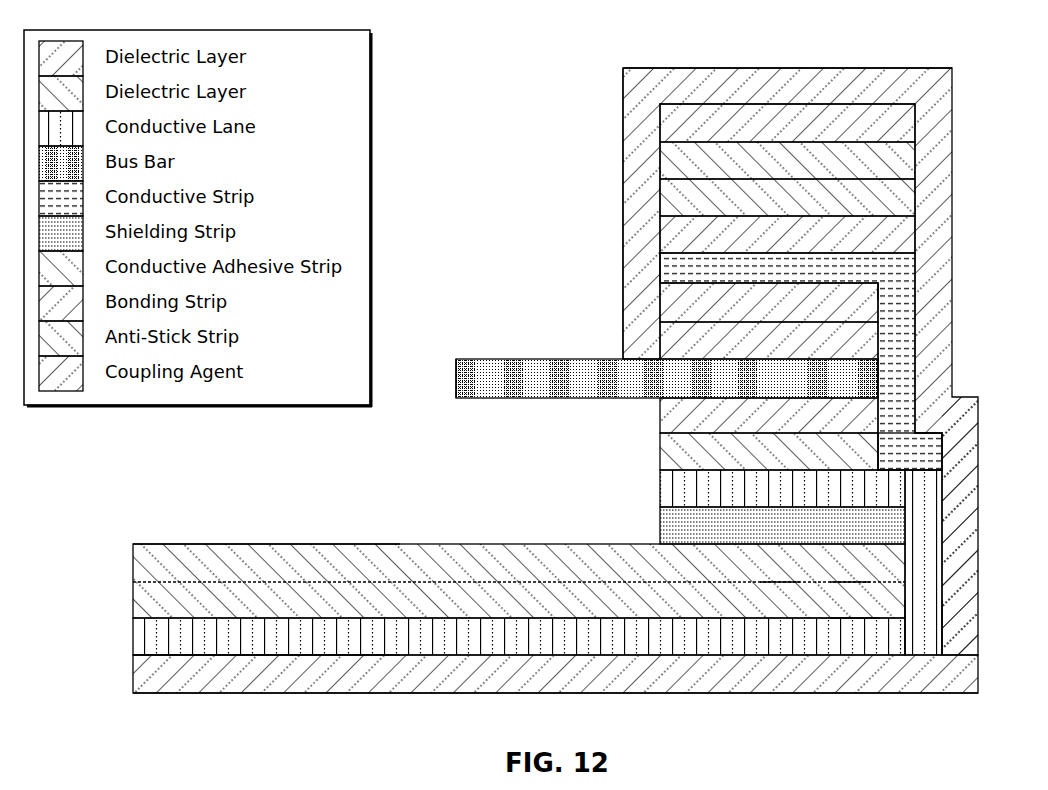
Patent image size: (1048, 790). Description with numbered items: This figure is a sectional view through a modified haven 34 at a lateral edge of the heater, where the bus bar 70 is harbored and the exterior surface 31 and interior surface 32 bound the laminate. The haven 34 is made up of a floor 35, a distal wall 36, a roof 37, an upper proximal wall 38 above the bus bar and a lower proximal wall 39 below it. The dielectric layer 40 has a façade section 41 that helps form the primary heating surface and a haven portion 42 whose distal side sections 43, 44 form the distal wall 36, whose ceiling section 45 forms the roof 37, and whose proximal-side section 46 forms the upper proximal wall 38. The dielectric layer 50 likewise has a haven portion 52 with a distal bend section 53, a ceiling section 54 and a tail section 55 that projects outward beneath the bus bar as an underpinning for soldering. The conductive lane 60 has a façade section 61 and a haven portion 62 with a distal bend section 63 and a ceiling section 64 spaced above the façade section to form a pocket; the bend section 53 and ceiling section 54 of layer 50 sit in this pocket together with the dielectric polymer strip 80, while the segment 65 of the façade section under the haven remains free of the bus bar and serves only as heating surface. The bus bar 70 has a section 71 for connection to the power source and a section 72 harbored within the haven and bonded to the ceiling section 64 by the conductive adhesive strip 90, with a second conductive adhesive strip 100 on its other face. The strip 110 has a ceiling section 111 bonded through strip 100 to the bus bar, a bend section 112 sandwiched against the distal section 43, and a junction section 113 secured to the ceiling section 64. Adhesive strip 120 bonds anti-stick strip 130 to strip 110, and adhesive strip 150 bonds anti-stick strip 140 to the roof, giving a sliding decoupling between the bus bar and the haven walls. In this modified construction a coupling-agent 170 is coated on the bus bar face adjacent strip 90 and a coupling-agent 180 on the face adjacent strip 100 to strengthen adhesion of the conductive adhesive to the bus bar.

The exterior surface 31 is at (610, 694).
The interior surface 32 is at (291, 543).
The haven 34 is at (712, 296).
The floor 35 is at (820, 724).
The distal wall 36 is at (1021, 297).
The roof 37 is at (787, 47).
The upper proximal wall 38 is at (585, 213).
The lower proximal wall 39 is at (625, 471).
The dielectric layer 40 is at (525, 682).
The façade section 41 is at (316, 679).
The haven portion 42 is at (956, 627).
The distal side section 43 is at (960, 526).
The distal side section 44 is at (800, 361).
The ceiling section 45 is at (787, 83).
The proximal-side section 46 is at (637, 213).
The dielectric layer 50 is at (525, 610).
The haven portion 52 is at (837, 604).
The distal bend section 53 is at (862, 569).
The ceiling section 54 is at (791, 569).
The tail section 55 is at (561, 567).
The conductive lane 60 is at (525, 645).
The façade section 61 is at (266, 640).
The haven portion 62 is at (919, 627).
The distal bend section 63 is at (923, 562).
The ceiling section 64 is at (782, 488).
The segment 65 is at (756, 637).
The bus bar 70 is at (776, 388).
The section 71 is at (490, 378).
The section 72 is at (845, 378).
The strip 80 is at (770, 535).
The strip 90 is at (776, 462).
The strip 100 is at (771, 315).
The strip 110 is at (771, 278).
The ceiling section 111 is at (705, 268).
The bend section 112 is at (856, 279).
The junction section 113 is at (910, 450).
The adhesive strip 120 is at (771, 241).
The anti-stick strip 130 is at (771, 204).
The anti-stick strip 140 is at (771, 167).
The adhesive strip 150 is at (771, 130).
The coupling-agent 170 is at (771, 425).
The coupling-agent 180 is at (771, 352).